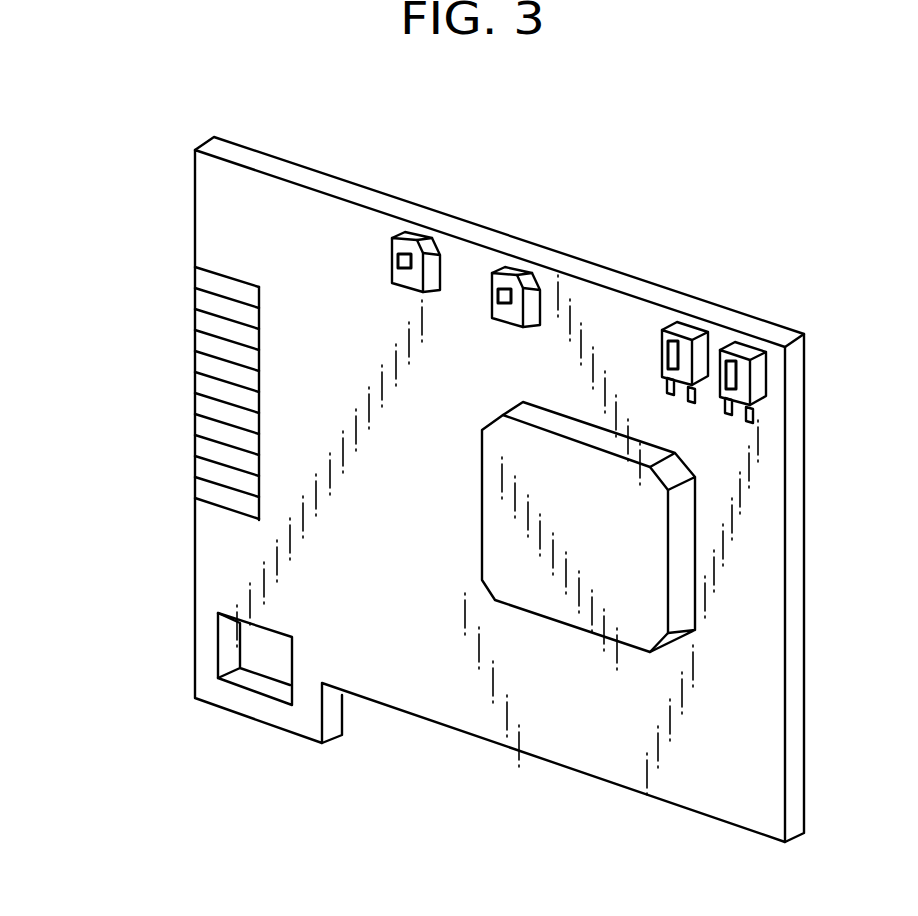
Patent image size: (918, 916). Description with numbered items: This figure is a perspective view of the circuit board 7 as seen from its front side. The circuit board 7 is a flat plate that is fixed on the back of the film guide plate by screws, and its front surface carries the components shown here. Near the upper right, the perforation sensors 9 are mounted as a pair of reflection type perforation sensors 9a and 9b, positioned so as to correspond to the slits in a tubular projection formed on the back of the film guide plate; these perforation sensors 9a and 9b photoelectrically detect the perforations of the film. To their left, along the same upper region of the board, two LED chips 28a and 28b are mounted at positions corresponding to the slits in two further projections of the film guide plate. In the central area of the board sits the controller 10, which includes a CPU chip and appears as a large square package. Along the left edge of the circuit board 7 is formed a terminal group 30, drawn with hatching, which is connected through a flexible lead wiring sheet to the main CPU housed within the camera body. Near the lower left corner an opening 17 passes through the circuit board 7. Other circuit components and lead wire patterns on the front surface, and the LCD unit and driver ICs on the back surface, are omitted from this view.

The circuit board 7 is at (195, 215).
The terminal group 30 is at (180, 404).
The opening 17 is at (227, 645).
The LED chip 28a is at (508, 272).
The LED chip 28b is at (412, 237).
The perforation sensors 9 is at (782, 250).
The reflection type perforation sensor 9a is at (743, 350).
The reflection type perforation sensor 9b is at (682, 328).
The controller 10 is at (575, 613).